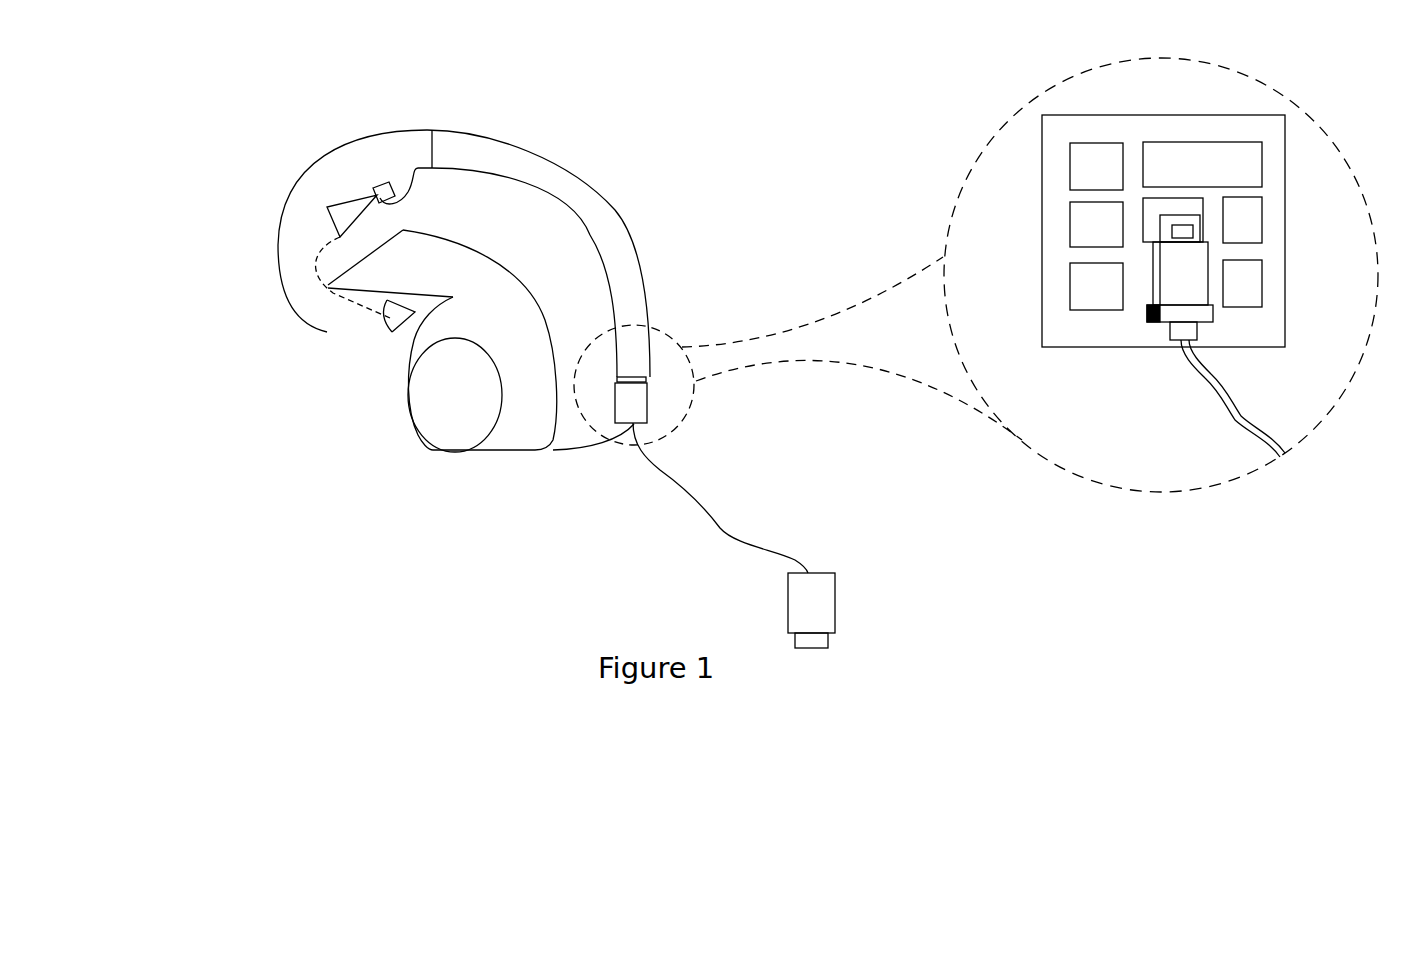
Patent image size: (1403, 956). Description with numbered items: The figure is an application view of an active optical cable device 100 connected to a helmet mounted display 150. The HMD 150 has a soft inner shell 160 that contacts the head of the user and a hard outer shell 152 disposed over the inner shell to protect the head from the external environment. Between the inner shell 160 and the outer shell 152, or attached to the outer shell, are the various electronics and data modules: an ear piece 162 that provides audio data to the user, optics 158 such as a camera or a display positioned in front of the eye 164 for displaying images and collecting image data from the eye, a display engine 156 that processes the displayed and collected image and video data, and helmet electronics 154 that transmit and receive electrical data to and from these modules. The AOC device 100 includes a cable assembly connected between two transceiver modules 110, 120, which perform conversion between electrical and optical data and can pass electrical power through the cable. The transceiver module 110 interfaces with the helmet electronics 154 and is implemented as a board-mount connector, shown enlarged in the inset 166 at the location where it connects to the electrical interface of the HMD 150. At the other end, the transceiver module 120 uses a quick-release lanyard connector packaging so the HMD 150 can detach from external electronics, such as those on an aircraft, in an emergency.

The active optical cable device 100 is at (764, 524).
The transceiver module 110 is at (638, 417).
The transceiver module 120 is at (837, 608).
The helmet mounted display 150 is at (612, 125).
The outer shell 152 is at (648, 298).
The helmet electronics 154 is at (600, 190).
The display engine 156 is at (338, 217).
The optics 158 is at (310, 271).
The inner shell 160 is at (508, 438).
The ear piece 162 is at (442, 410).
The eye 164 is at (386, 326).
The inset 166 is at (1213, 488).